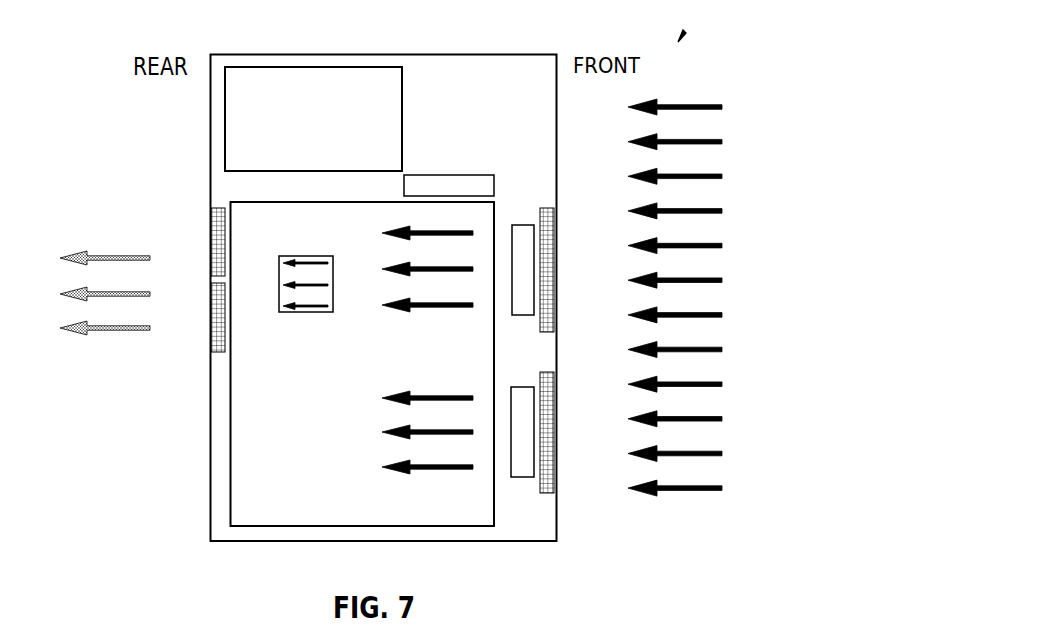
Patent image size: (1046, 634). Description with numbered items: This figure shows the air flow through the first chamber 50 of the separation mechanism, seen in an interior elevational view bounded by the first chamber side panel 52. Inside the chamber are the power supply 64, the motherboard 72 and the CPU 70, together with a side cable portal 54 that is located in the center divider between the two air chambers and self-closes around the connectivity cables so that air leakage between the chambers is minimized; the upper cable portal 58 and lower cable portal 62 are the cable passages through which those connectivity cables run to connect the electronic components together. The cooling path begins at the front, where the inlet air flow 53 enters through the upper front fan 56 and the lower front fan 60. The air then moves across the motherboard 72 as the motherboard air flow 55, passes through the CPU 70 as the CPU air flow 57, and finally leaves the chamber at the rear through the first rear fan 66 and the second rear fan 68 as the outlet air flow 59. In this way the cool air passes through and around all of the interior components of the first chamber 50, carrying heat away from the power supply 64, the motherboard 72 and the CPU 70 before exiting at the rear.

The first chamber 50 is at (686, 33).
The first chamber side panel 52 is at (557, 115).
The inlet air flow 53 is at (707, 105).
The side cable portal 54 is at (494, 186).
The motherboard air flow 55 is at (433, 467).
The upper front fan 56 is at (555, 226).
The CPU air flow 57 is at (312, 312).
The upper cable portal 58 is at (534, 268).
The outlet air flow 59 is at (107, 255).
The lower front fan 60 is at (555, 398).
The lower cable portal 62 is at (534, 442).
The power supply 64 is at (225, 135).
The first rear fan 66 is at (210, 222).
The second rear fan 68 is at (210, 337).
The CPU 70 is at (279, 296).
The motherboard 72 is at (229, 388).